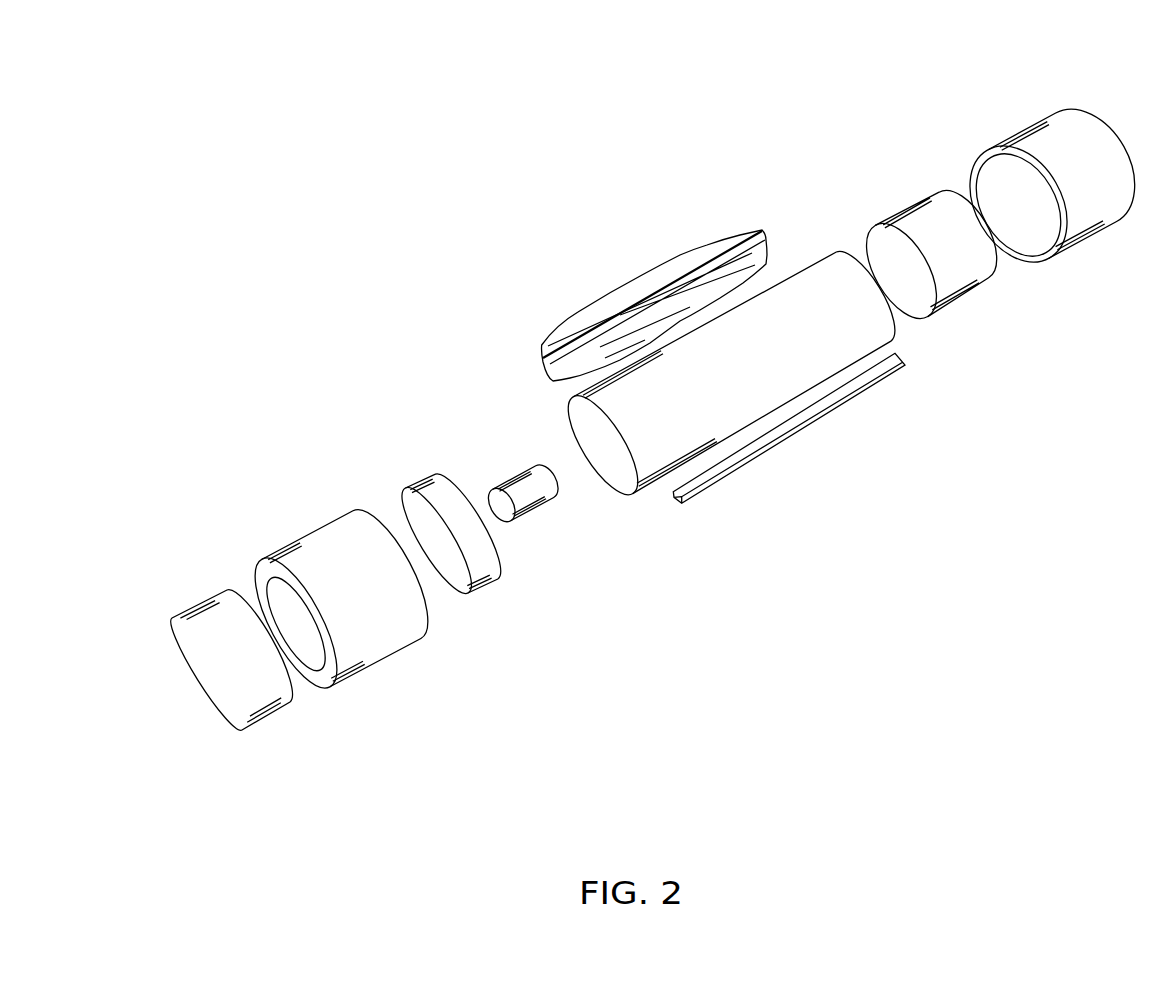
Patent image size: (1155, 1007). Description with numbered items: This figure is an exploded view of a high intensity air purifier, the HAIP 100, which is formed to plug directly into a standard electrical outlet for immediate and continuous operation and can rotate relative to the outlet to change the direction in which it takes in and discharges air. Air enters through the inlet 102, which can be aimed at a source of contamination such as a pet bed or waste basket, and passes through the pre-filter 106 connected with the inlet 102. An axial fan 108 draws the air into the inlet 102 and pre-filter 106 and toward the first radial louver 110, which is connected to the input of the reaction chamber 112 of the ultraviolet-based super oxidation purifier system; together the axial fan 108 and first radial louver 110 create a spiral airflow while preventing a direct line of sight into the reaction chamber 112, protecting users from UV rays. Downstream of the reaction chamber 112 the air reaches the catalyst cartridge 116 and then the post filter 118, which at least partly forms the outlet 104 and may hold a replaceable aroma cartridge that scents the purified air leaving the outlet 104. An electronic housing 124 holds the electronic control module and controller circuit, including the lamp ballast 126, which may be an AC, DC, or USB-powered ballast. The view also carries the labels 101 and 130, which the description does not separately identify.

The high intensity air purifier (HAIP) 100 is at (855, 556).
The end cap assembly 101 is at (192, 690).
The inlet 102 is at (803, 263).
The outlet 104 is at (1101, 110).
The pre-filter 106 is at (265, 718).
The axial fan 108 is at (305, 534).
The first radial louver 110 is at (423, 478).
The reaction chamber (RC) 112 is at (620, 480).
The catalyst cartridge 116 is at (907, 209).
The post filter 118 is at (1062, 236).
The electronic housing 124 is at (716, 245).
The lamp ballast 126 is at (528, 513).
The optical element 130 is at (620, 246).